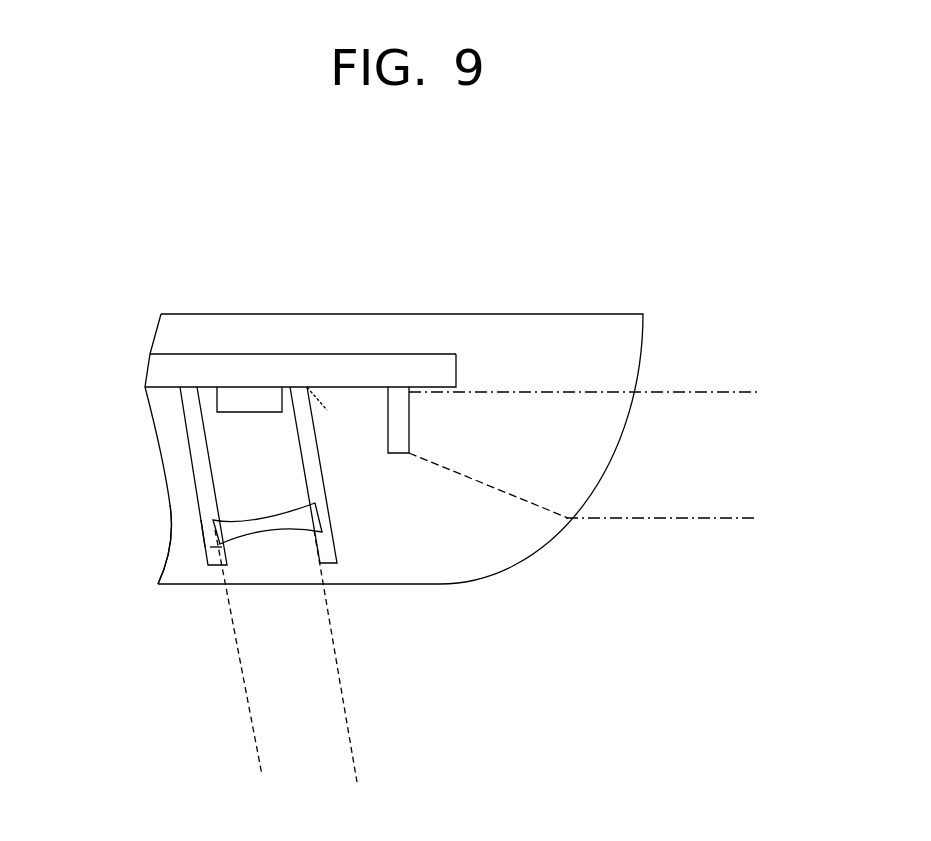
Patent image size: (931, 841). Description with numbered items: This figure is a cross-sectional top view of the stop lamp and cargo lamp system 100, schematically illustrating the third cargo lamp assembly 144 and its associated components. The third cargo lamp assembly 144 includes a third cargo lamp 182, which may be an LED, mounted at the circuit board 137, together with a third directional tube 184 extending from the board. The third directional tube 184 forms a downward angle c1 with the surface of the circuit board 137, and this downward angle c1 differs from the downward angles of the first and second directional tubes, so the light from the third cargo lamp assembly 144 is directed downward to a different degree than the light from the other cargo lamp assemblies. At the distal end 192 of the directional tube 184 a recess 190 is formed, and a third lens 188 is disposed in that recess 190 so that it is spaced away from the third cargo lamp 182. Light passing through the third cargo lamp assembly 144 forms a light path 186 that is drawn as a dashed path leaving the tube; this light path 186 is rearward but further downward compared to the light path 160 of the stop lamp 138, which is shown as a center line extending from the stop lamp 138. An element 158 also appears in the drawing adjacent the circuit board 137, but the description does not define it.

The stop lamp and cargo lamp system 100 is at (581, 257).
The top plate 158 is at (172, 354).
The circuit board 137 is at (327, 368).
The third cargo lamp 182 is at (245, 398).
The third directional tube 184 is at (197, 438).
The third cargo lamp assembly 144 is at (196, 489).
The recess 190 is at (197, 537).
The third lens 188 is at (278, 522).
The distal end 192 is at (227, 567).
The stop lamp 138 is at (397, 455).
The light path 186 is at (348, 737).
The light path 160 is at (708, 392).
The downward angle c1 is at (328, 404).